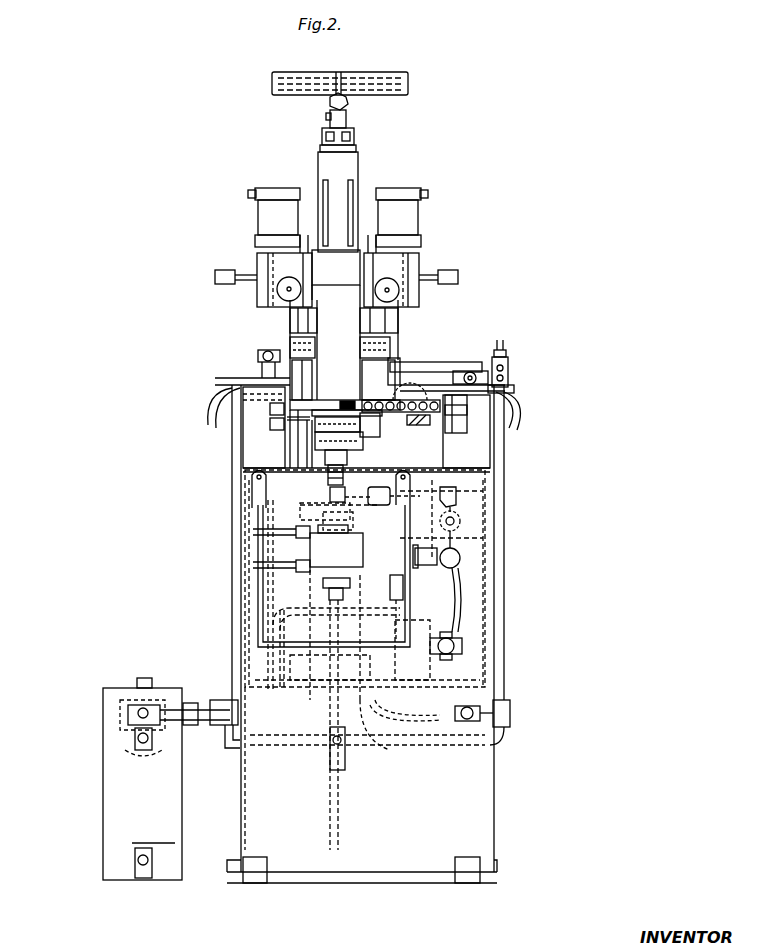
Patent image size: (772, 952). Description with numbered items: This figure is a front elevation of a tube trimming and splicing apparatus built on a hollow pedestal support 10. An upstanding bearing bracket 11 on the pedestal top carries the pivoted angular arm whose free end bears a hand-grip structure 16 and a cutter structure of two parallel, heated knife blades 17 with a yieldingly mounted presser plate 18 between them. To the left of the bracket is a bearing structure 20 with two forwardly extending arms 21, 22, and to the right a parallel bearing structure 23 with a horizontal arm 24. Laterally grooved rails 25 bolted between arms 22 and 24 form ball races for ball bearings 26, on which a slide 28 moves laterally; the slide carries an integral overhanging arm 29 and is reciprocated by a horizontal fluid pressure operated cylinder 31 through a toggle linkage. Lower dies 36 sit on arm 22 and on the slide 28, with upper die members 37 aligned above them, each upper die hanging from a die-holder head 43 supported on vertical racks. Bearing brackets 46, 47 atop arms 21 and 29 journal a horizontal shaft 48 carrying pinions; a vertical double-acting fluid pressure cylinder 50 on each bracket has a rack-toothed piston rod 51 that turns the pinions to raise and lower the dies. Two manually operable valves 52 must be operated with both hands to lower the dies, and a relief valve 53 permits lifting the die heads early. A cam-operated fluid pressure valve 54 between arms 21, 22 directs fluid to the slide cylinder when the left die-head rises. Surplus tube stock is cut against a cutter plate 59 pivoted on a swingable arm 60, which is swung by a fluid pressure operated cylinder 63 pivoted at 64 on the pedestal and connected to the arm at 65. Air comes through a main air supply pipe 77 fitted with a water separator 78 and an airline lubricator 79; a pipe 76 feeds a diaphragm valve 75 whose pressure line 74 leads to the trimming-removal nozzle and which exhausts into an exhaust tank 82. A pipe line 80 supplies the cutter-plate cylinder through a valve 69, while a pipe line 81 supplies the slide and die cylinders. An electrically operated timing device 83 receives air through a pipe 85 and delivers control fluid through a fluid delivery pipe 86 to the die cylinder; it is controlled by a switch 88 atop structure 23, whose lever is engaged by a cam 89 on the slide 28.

The pedestal support 10 is at (468, 757).
The bearing bracket 11 is at (296, 470).
The hand-grip structure 16 is at (370, 80).
The knife blades 17 is at (318, 172).
The presser plate 18 is at (340, 172).
The bearing structure 20 is at (290, 448).
The arm 21 is at (290, 320).
The arm 22 is at (258, 418).
The bearing structure 23 is at (482, 458).
The arm 24 is at (460, 428).
The rails 25 is at (338, 405).
The ball bearings 26 is at (348, 402).
The slide 28 is at (425, 380).
The overhanging arm 29 is at (362, 322).
The fluid pressure operated cylinder 31 is at (466, 375).
The lower dies 36 is at (440, 322).
The upper die members 37 is at (340, 346).
The die-holder head 43 is at (348, 283).
The bearing bracket 46 is at (303, 240).
The bearing bracket 47 is at (287, 315).
The horizontal shaft 48 is at (257, 265).
The fluid pressure cylinder 50 is at (262, 205).
The piston rod 51 is at (292, 322).
The manually operable valves 52 is at (215, 275).
The relief valve 53 is at (508, 368).
The fluid pressure valve 54 is at (258, 358).
The cutter plate 59 is at (330, 445).
The swingable arm 60 is at (355, 445).
The fluid pressure operated cylinder 63 is at (305, 540).
The pivot 64 is at (320, 590).
The pivotal connection 65 is at (352, 468).
The valve 69 is at (330, 100).
The pressure line 74 is at (455, 490).
The diaphragm valve 75 is at (465, 540).
The pipe 76 is at (445, 635).
The main air supply pipe 77 is at (135, 742).
The water separator 78 is at (103, 808).
The airline lubricator 79 is at (125, 722).
The pipe line 80 is at (235, 605).
The pipe line 81 is at (507, 595).
The exhaust tank 82 is at (387, 742).
The timing device 83 is at (380, 600).
The pipe 85 is at (400, 708).
The fluid delivery pipe 86 is at (450, 585).
The switch 88 is at (506, 355).
The cam 89 is at (500, 345).